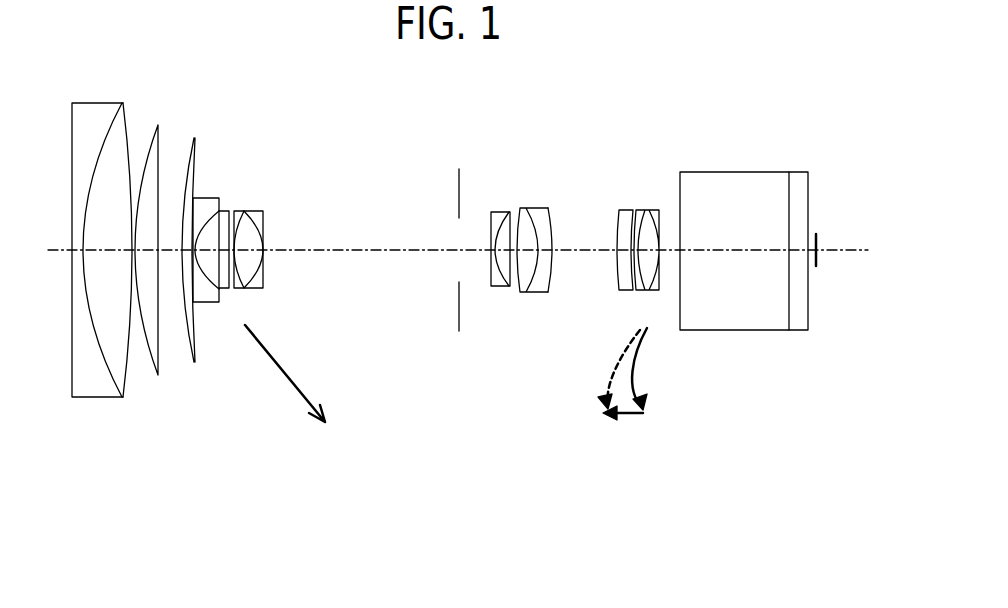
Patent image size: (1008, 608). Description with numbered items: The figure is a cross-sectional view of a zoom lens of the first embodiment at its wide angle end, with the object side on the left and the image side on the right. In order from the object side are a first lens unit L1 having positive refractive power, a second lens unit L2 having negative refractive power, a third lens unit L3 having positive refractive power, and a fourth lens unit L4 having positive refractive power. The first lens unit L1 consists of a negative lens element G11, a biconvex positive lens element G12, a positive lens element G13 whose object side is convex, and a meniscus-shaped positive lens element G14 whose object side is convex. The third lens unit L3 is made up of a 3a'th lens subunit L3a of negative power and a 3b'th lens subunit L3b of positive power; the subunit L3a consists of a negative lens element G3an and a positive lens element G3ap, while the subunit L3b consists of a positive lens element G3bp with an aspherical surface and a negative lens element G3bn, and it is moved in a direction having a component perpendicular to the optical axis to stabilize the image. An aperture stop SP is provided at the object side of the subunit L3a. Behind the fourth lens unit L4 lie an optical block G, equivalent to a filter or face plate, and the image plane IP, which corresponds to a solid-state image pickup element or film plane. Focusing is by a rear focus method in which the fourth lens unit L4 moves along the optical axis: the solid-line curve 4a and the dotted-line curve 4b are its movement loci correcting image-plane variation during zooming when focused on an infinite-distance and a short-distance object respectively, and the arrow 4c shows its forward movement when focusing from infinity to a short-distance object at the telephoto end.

The first lens unit L1 is at (206, 92).
The second lens unit L2 is at (268, 190).
The third lens unit L3 is at (556, 153).
The 3a'th lens unit (first lens subunit) L3a is at (512, 200).
The 3b'th lens unit (second lens subunit) L3b is at (552, 200).
The fourth lens unit L4 is at (659, 205).
The aperture stop SP is at (456, 180).
The optical block G is at (812, 155).
The image plane IP is at (817, 237).
The negative lens element G11 is at (90, 398).
The biconvex-shaped positive lens element G12 is at (127, 368).
The positive lens element G13 is at (160, 350).
The meniscus-shaped positive lens element G14 is at (192, 323).
The negative lens element G3an is at (495, 287).
The positive lens element G3ap is at (506, 287).
The positive lens element G3bp is at (520, 292).
The negative lens element G3bn is at (540, 292).
The solid-line curve 4a is at (635, 368).
The dotted-line curve 4b is at (606, 363).
The arrow 4c is at (627, 417).